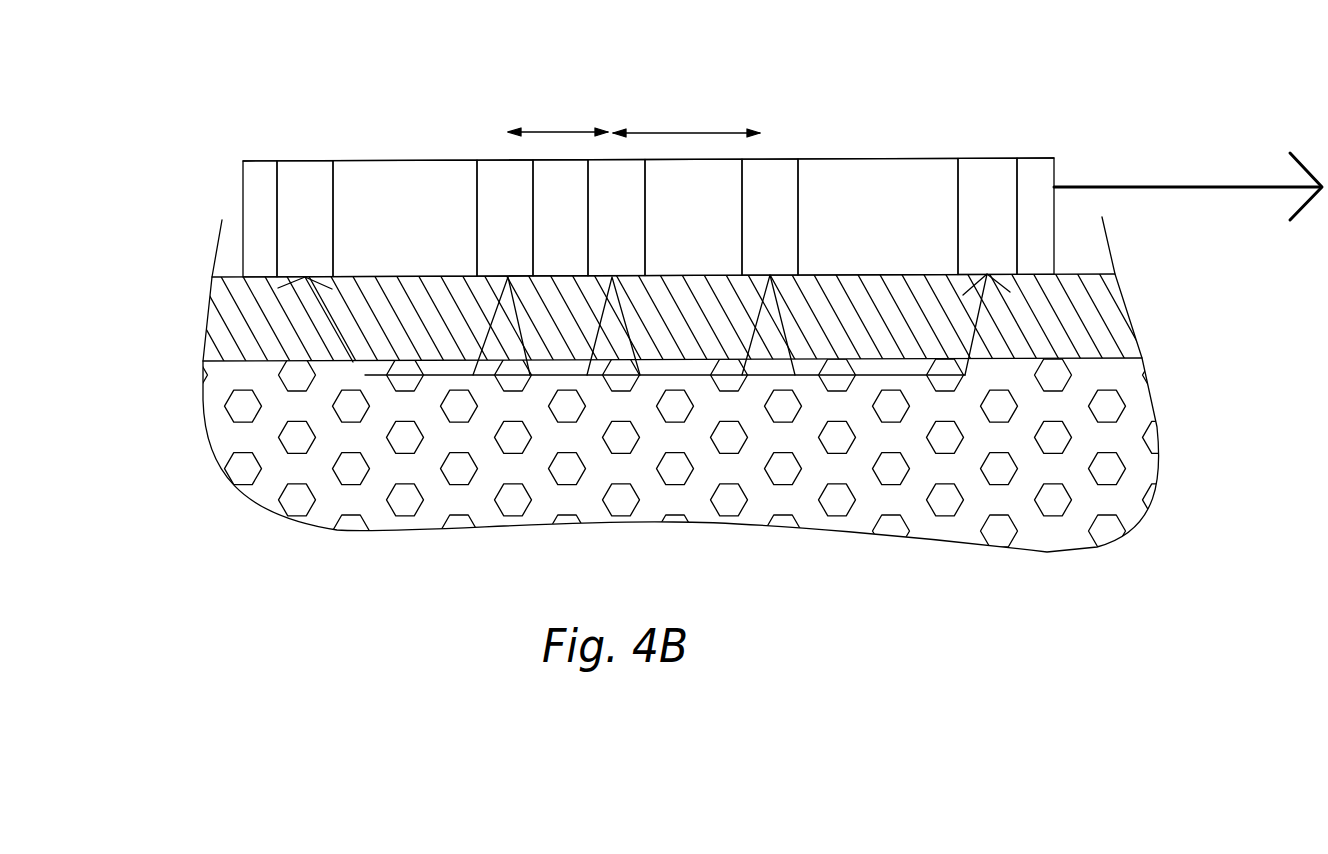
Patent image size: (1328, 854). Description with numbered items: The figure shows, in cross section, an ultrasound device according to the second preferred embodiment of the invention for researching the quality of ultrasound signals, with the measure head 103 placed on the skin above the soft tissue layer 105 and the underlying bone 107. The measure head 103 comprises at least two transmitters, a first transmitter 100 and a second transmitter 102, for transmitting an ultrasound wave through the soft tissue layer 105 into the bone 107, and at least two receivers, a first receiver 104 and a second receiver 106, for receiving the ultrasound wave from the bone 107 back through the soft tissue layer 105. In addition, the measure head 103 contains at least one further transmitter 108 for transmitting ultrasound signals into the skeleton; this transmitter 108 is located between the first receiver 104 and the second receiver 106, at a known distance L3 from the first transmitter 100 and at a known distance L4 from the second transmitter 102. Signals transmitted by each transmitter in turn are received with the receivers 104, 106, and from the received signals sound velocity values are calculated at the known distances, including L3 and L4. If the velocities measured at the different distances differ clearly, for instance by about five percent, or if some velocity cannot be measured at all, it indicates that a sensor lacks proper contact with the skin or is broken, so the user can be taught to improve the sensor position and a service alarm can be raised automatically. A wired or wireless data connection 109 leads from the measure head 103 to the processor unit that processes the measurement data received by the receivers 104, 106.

The first transmitter 100 is at (476, 212).
The second transmitter 102 is at (799, 205).
The measure head 103 is at (378, 161).
The first receiver 104 is at (303, 167).
The soft tissue layer 105 is at (228, 332).
The second receiver 106 is at (985, 158).
The bone 107 is at (233, 447).
The transmitter 108 is at (645, 190).
The data connection 109 is at (1202, 187).
The known distance L3 is at (558, 106).
The known distance L4 is at (686, 106).